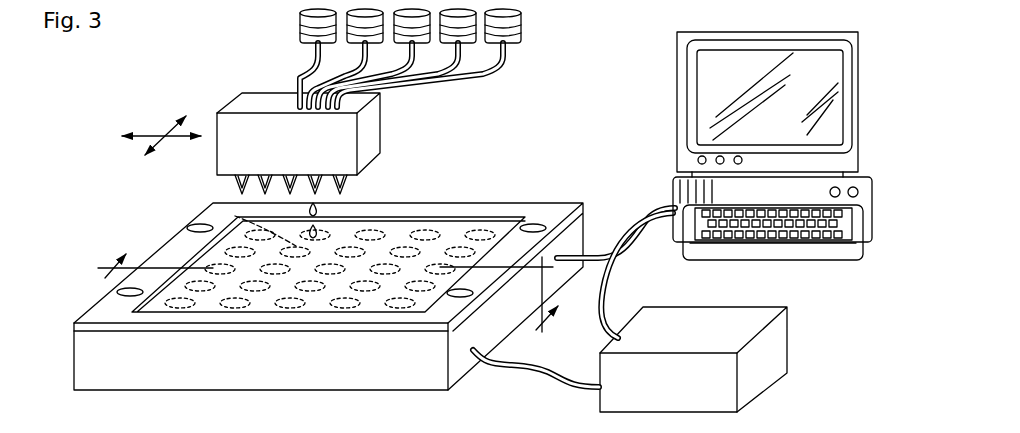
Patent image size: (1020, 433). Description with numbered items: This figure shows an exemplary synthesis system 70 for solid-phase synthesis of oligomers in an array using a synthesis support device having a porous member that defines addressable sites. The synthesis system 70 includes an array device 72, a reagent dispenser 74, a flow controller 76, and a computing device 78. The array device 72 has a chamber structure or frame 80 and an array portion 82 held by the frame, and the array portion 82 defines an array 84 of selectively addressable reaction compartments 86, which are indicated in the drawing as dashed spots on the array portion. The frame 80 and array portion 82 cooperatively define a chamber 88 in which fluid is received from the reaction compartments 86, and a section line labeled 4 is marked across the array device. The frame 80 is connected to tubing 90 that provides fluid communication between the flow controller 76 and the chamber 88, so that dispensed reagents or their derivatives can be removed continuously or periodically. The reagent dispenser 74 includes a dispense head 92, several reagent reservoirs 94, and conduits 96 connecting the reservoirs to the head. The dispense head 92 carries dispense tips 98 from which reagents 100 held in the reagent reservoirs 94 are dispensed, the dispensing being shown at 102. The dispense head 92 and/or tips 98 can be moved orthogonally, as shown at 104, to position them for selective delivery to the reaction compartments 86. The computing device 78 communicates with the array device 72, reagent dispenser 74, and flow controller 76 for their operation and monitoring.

The section line 4- 4 is at (336, 280).
The synthesis system 70 is at (76, 158).
The array device 72 is at (90, 233).
The reagent dispenser 74 is at (164, 77).
The flow controller 76 is at (790, 330).
The computing device 78 is at (667, 85).
The frame 80 is at (72, 357).
The array portion 82 is at (200, 258).
The array 84 is at (258, 230).
The reaction compartments 86 is at (345, 290).
The chamber 88 is at (397, 358).
The tubing 90 is at (549, 373).
The dispense head 92 is at (262, 90).
The reagent reservoirs 94 is at (366, 15).
The conduits 96 is at (440, 68).
The dispense tips 98 is at (300, 172).
The reagents 100 is at (463, 45).
The dispensing of reagents 102 is at (325, 232).
The movement of dispense head or tips 104 is at (165, 133).